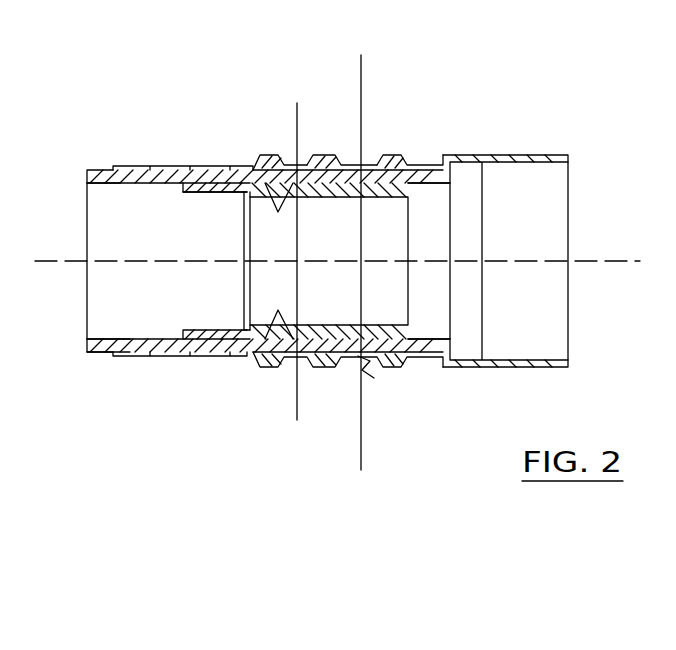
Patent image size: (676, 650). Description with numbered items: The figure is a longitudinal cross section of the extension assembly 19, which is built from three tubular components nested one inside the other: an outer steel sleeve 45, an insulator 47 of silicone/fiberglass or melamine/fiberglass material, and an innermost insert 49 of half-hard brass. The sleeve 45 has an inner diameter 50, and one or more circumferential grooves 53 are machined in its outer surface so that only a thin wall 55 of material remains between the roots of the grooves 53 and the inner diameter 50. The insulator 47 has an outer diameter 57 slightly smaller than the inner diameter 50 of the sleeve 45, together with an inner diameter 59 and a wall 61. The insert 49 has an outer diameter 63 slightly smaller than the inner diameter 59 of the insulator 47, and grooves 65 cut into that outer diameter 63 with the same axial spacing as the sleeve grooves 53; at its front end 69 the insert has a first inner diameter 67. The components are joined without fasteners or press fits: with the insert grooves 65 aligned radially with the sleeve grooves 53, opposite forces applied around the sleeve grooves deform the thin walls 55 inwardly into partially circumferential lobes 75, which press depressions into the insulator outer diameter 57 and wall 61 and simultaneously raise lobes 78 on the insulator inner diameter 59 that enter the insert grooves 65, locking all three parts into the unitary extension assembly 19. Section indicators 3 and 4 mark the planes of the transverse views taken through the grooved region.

The extension assembly 19 is at (543, 151).
The sleeve 45 is at (132, 162).
The insulator 47 is at (95, 168).
The insert 49 is at (137, 221).
The inner diameter 50 is at (74, 176).
The circumferential grooves 53 is at (363, 370).
The thin wall 55 is at (363, 172).
The outer diameter 57 is at (113, 338).
The inner diameter 59 is at (120, 342).
The wall 61 is at (108, 345).
The outer diameter 63 is at (247, 330).
The grooves 65 is at (395, 160).
The first inner diameter 67 is at (526, 314).
The front end 69 is at (410, 190).
The lobes 75 is at (262, 172).
The lobes 78 is at (247, 352).
The section line 3- 3 is at (361, 55).
The section line 4- 4 is at (297, 103).